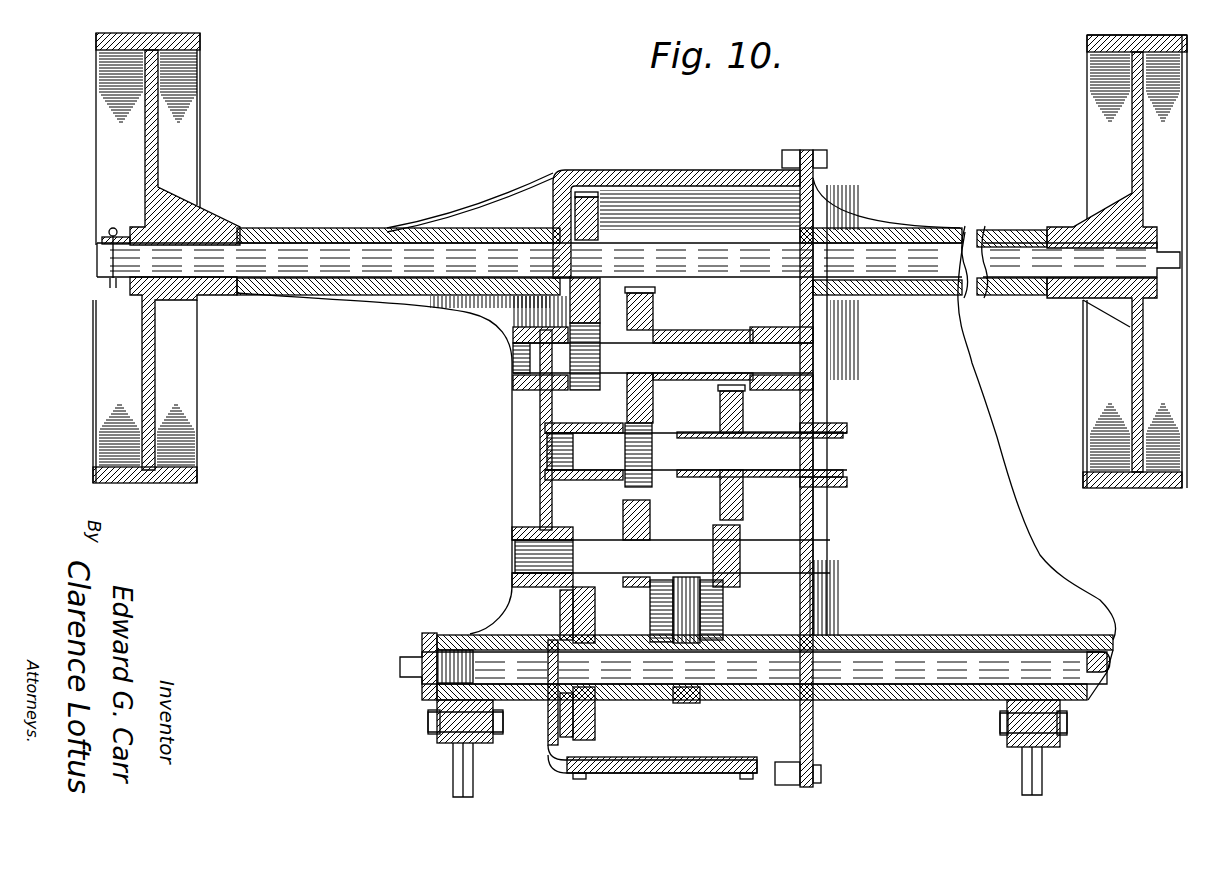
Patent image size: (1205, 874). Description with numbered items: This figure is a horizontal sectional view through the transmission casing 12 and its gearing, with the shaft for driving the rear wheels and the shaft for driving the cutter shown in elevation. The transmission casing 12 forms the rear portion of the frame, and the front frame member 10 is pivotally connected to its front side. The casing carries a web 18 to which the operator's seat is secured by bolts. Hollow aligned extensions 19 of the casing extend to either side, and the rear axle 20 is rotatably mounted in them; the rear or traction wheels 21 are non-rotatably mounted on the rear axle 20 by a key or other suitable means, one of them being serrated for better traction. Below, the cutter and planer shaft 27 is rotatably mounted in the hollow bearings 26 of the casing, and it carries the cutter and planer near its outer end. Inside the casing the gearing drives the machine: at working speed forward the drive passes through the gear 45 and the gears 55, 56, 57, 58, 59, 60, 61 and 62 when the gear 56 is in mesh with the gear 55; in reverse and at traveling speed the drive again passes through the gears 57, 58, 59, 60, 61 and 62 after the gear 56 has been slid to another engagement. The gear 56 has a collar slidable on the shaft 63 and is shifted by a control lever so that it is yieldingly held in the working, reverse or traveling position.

The front frame member 10 is at (450, 785).
The transmission casing 12 is at (666, 177).
The web 18 is at (1033, 567).
The hollow aligned extensions 19 is at (327, 233).
The rear axle 20 is at (387, 253).
The rear or traction wheels 21 is at (201, 175).
The hollow bearings 26 is at (963, 700).
The cutter and planer shaft 27 is at (938, 678).
The gear 45 is at (688, 703).
The gear 55 is at (684, 585).
The gear 56 is at (623, 513).
The gear 57 is at (716, 524).
The gear 58 is at (720, 400).
The gear 59 is at (623, 480).
The gear 60 is at (655, 296).
The gear 61 is at (570, 390).
The gear 62 is at (591, 194).
The shaft 63 is at (512, 553).